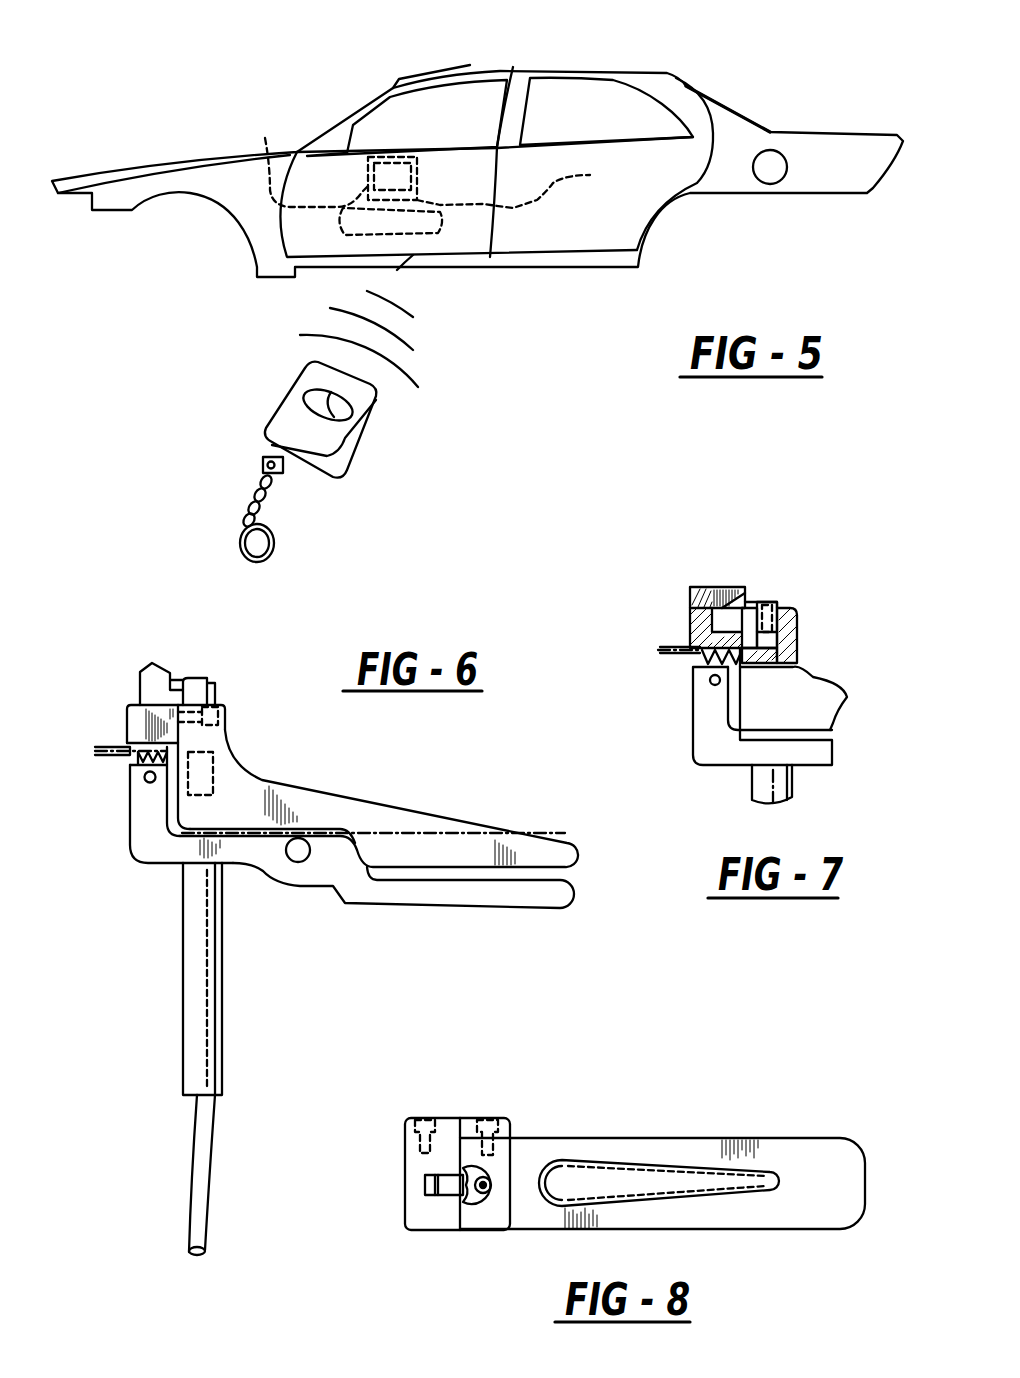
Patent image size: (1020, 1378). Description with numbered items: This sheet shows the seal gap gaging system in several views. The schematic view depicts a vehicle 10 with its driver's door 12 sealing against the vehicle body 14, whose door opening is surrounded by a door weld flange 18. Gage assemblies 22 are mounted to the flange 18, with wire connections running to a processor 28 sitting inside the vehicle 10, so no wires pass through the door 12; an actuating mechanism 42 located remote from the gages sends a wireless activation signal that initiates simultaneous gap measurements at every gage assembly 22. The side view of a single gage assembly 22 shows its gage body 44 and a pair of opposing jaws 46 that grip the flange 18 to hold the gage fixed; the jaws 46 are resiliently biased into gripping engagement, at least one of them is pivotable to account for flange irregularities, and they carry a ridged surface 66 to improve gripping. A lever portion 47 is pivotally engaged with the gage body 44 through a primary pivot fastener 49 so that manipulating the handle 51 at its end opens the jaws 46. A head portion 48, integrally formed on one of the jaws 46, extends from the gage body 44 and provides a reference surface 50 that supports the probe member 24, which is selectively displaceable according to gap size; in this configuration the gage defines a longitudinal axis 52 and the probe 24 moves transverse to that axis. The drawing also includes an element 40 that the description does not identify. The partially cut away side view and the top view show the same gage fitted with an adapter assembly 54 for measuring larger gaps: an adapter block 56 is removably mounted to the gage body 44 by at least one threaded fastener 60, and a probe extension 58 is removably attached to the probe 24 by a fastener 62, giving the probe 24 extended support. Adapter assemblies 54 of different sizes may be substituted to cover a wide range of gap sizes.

In FIG. 5, the vehicle 10 is at (308, 86).
In FIG. 5, the driver's door 12 is at (295, 237).
In FIG. 5, the vehicle body 14 is at (530, 78).
In FIG. 6, the door weld flange 18 is at (102, 737).
In FIG. 7, the door weld flange 18 is at (663, 658).
In FIG. 5, the gage assembly 22 is at (265, 140).
In FIG. 6, the gage assembly 22 is at (122, 660).
In FIG. 8, the gage assembly 22 is at (738, 1068).
In FIG. 6, the probe member 24 is at (168, 680).
In FIG. 7, the probe member 24 is at (690, 632).
In FIG. 5, the processor 28 is at (418, 170).
In FIG. 6, the lever 40 is at (210, 773).
In FIG. 5, the actuating mechanism 42 is at (333, 437).
In FIG. 6, the gage body 44 is at (245, 797).
In FIG. 7, the gage body 44 is at (820, 687).
In FIG. 8, the gage body 44 is at (557, 1147).
In FIG. 6, the opposing jaws 46 is at (130, 713).
In FIG. 7, the opposing jaws 46 is at (690, 620).
In FIG. 6, the lever portion 47 is at (243, 893).
In FIG. 6, the head portion 48 is at (217, 717).
In FIG. 6, the primary pivot fastener 49 is at (294, 863).
In FIG. 6, the reference surface 50 is at (210, 707).
In FIG. 6, the handle 51 is at (512, 893).
In FIG. 6, the longitudinal axis 52 is at (543, 827).
In FIG. 7, the adapter assembly 54 is at (825, 610).
In FIG. 7, the adapter block 56 is at (737, 588).
In FIG. 8, the adapter block 56 is at (410, 1153).
In FIG. 7, the probe extension 58 is at (723, 587).
In FIG. 8, the probe extension 58 is at (450, 1190).
In FIG. 8, the threaded fastener 60 is at (423, 1118).
In FIG. 7, the fastener 62 is at (767, 602).
In FIG. 8, the fastener 62 is at (483, 1192).
In FIG. 6, the ridged surface 66 is at (190, 733).